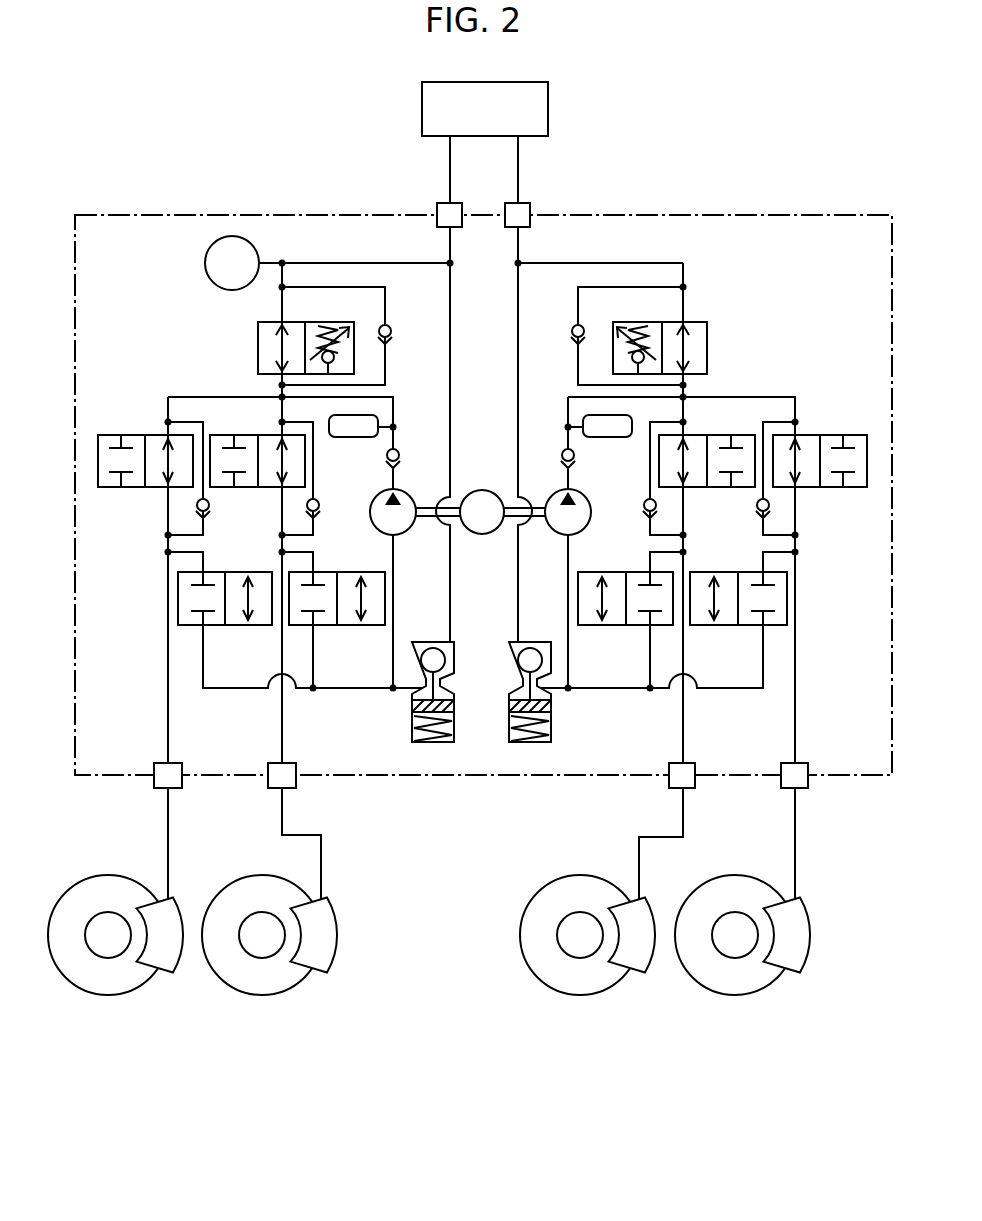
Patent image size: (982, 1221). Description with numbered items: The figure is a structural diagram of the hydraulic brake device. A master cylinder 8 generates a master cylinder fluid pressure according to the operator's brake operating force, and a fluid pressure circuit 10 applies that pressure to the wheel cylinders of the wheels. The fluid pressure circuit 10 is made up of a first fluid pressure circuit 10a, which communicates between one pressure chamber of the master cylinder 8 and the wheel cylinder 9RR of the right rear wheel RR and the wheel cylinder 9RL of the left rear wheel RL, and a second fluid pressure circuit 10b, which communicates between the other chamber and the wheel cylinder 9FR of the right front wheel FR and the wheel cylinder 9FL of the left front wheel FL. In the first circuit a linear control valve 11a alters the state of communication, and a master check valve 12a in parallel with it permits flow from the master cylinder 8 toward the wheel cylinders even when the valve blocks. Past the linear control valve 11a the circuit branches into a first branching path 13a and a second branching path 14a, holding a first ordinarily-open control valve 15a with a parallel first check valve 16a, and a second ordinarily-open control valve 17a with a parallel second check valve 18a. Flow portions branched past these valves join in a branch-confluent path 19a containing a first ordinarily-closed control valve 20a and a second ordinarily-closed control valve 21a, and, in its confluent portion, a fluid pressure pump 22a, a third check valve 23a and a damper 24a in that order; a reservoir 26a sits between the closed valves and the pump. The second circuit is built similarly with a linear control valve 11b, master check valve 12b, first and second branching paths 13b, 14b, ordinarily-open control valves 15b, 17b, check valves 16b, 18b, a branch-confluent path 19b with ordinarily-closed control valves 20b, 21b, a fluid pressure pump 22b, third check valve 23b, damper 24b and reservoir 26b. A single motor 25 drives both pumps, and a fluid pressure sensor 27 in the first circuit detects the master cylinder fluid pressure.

The master cylinder 8 is at (422, 112).
The fluid pressure circuit 10 is at (112, 212).
The first fluid pressure circuit 10a is at (450, 185).
The second fluid pressure circuit 10b is at (518, 183).
The linear control valve 11a is at (258, 346).
The linear control valve 11b is at (707, 346).
The master check valve 12a is at (388, 326).
The master check valve 12b is at (576, 326).
The first branching path 13a is at (185, 397).
The first branching path 13b is at (685, 415).
The second branching path 14a is at (280, 415).
The second branching path 14b is at (780, 397).
The first ordinarily-open control valve 15a is at (135, 488).
The first ordinarily-open control valve 15b is at (659, 470).
The first check valve 16a is at (210, 510).
The first check valve 16b is at (645, 512).
The second ordinarily-open control valve 17a is at (305, 470).
The second ordinarily-open control valve 17b is at (827, 488).
The second check valve 18a is at (320, 512).
The second check valve 18b is at (757, 512).
The branch-confluent path 19a is at (233, 690).
The branch-confluent path 19b is at (725, 690).
The first ordinarily-closed control valve 20a is at (218, 627).
The first ordinarily-closed control valve 20b is at (636, 627).
The second ordinarily-closed control valve 21a is at (315, 627).
The second ordinarily-closed control valve 21b is at (752, 627).
The fluid pressure pump 22a is at (403, 527).
The fluid pressure pump 22b is at (558, 527).
The third check valve 23a is at (405, 443).
The third check valve 23b is at (560, 443).
The damper 24a is at (360, 415).
The damper 24b is at (602, 415).
The motor 25 is at (482, 489).
The reservoir 26a is at (410, 728).
The reservoir 26b is at (552, 728).
The fluid pressure sensor 27 is at (205, 263).
The wheel cylinder 9RR is at (165, 962).
The wheel cylinder 9RL is at (322, 952).
The wheel cylinder 9FR is at (640, 965).
The wheel cylinder 9FL is at (793, 965).
The right rear wheel RR is at (97, 985).
The left rear wheel RL is at (272, 985).
The right front wheel FR is at (562, 975).
The left front wheel FL is at (728, 988).